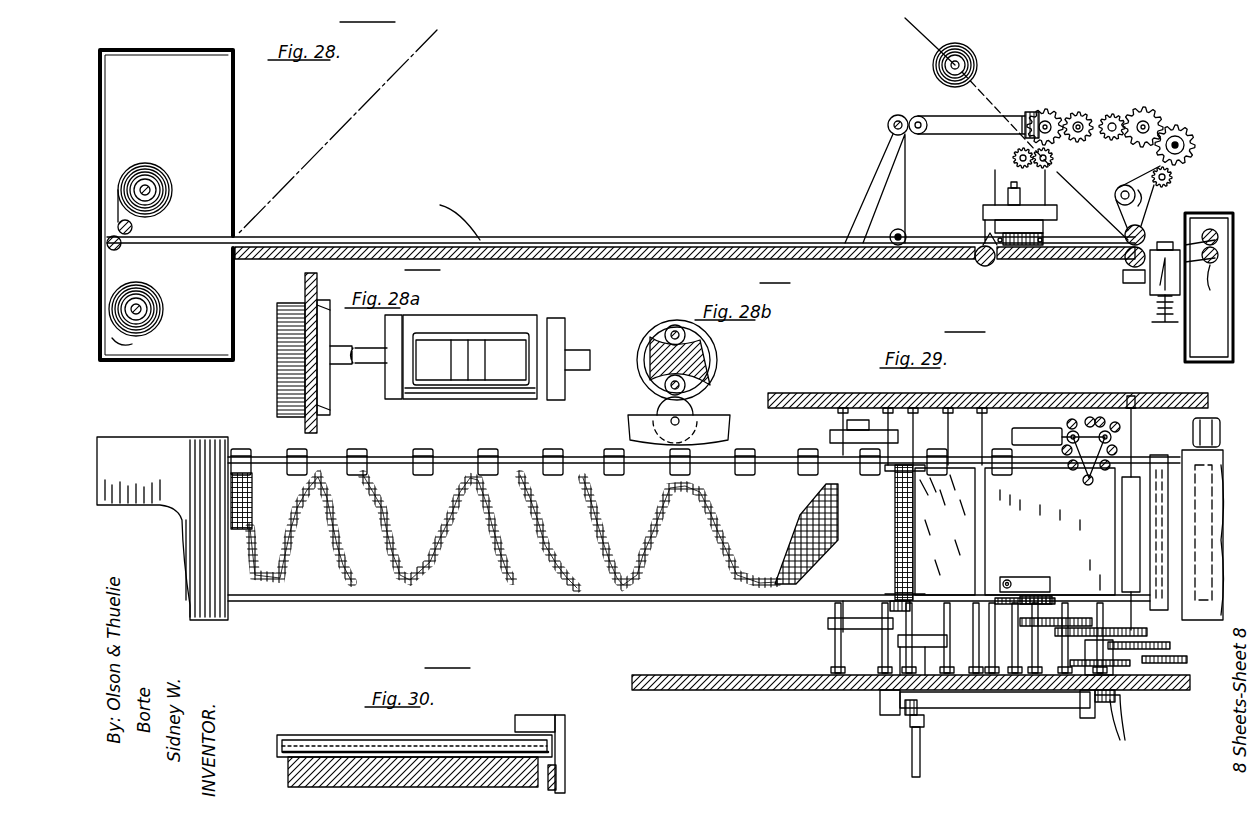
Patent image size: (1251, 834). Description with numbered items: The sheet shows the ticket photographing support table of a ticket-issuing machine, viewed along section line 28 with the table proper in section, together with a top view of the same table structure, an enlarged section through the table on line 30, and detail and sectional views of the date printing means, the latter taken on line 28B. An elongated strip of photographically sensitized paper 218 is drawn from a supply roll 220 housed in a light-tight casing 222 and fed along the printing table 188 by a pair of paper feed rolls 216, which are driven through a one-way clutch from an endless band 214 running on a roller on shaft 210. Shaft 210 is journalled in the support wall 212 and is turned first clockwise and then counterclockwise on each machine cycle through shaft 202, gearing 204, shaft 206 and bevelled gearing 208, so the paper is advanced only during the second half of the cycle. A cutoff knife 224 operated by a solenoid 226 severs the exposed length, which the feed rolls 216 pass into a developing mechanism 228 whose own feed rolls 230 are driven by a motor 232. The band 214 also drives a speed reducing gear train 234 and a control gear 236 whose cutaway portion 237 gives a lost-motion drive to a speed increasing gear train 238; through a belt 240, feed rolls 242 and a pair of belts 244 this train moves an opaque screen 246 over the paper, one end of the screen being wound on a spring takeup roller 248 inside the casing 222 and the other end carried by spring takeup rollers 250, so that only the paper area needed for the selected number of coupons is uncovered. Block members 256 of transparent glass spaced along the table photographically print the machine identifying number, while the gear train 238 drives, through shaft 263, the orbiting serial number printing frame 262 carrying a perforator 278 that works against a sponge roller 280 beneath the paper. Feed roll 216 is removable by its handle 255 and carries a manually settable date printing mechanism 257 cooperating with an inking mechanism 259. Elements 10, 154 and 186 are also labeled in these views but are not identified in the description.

In FIG. 28A, the counter mechanism 10 is at (268, 418).
In FIG. 29, the section line 28 is at (215, 608).
In FIG. 29, the section line 30 is at (395, 608).
In FIG. 28, the guide line 154 is at (440, 55).
In FIG. 29, the top plate 186 is at (1068, 410).
In FIG. 28, the printing table 188 is at (540, 248).
In FIG. 30, the printing table 188 is at (290, 777).
In FIG. 29, the shaft 202 is at (912, 772).
In FIG. 29, the gearing 204 is at (908, 722).
In FIG. 29, the shaft 206 is at (1018, 712).
In FIG. 29, the bevelled gearing 208 is at (1125, 740).
In FIG. 28, the shaft 210 is at (1115, 192).
In FIG. 29, the shaft 210 is at (1108, 670).
In FIG. 29, the support wall 212 is at (775, 692).
In FIG. 28, the endless band 214 is at (1160, 210).
In FIG. 28, the paper feed rolls 216 is at (1125, 263).
In FIG. 28A, the paper feed rolls 216 is at (560, 400).
In FIG. 28B, the paper feed rolls 216 is at (717, 366).
In FIG. 29, the paper feed rolls 216 is at (1122, 523).
In FIG. 28, the photographically sensitized paper 218 is at (158, 246).
In FIG. 30, the photographically sensitized paper 218 is at (445, 747).
In FIG. 28, the supply roll 220 is at (165, 312).
In FIG. 28, the light-tight casing 222 is at (170, 360).
In FIG. 29, the light-tight casing 222 is at (236, 437).
In FIG. 28, the cutoff knife 224 is at (1150, 292).
In FIG. 28, the solenoid 226 is at (1158, 312).
In FIG. 28, the developing mechanism 228 is at (1186, 356).
In FIG. 28, the feed rolls 230 is at (1209, 287).
In FIG. 29, the feed rolls 230 is at (1200, 630).
In FIG. 29, the motor 232 is at (1195, 432).
In FIG. 28, the speed reducing gear train 234 is at (1183, 128).
In FIG. 28, the control gear 236 is at (1130, 110).
In FIG. 29, the control gear 236 is at (1090, 625).
In FIG. 28, the cutaway portion 237 is at (1105, 110).
In FIG. 28, the speed increasing gear train 238 is at (1066, 108).
In FIG. 28, the belt 240 is at (955, 138).
In FIG. 29, the belt 240 is at (920, 650).
In FIG. 28, the feed rolls 242 is at (887, 125).
In FIG. 29, the feed rolls 242 is at (897, 478).
In FIG. 28, the pair of belts 244 is at (870, 176).
In FIG. 29, the pair of belts 244 is at (840, 428).
In FIG. 28, the screen 246 is at (186, 234).
In FIG. 29, the screen 246 is at (525, 605).
In FIG. 30, the screen 246 is at (330, 735).
In FIG. 28, the spring takeup roller 248 is at (148, 170).
In FIG. 28, the spring takeup rollers 250 is at (975, 55).
In FIG. 29, the spring takeup rollers 250 is at (965, 465).
In FIG. 28A, the handle 255 is at (287, 302).
In FIG. 29, the block members 256 is at (670, 478).
In FIG. 30, the block members 256 is at (540, 720).
In FIG. 28A, the date printing mechanism 257 is at (432, 392).
In FIG. 28B, the date printing mechanism 257 is at (660, 325).
In FIG. 28, the inking mechanism 259 is at (1122, 278).
In FIG. 28B, the inking mechanism 259 is at (660, 410).
In FIG. 28, the serial number printing device 262 is at (1058, 212).
In FIG. 29, the serial number printing device 262 is at (1018, 577).
In FIG. 28, the shaft 263 is at (1050, 162).
In FIG. 28, the perforator 278 is at (980, 222).
In FIG. 29, the perforator 278 is at (1060, 520).
In FIG. 28, the sponge roller 280 is at (985, 268).
In FIG. 28A, the section line 28B is at (470, 412).